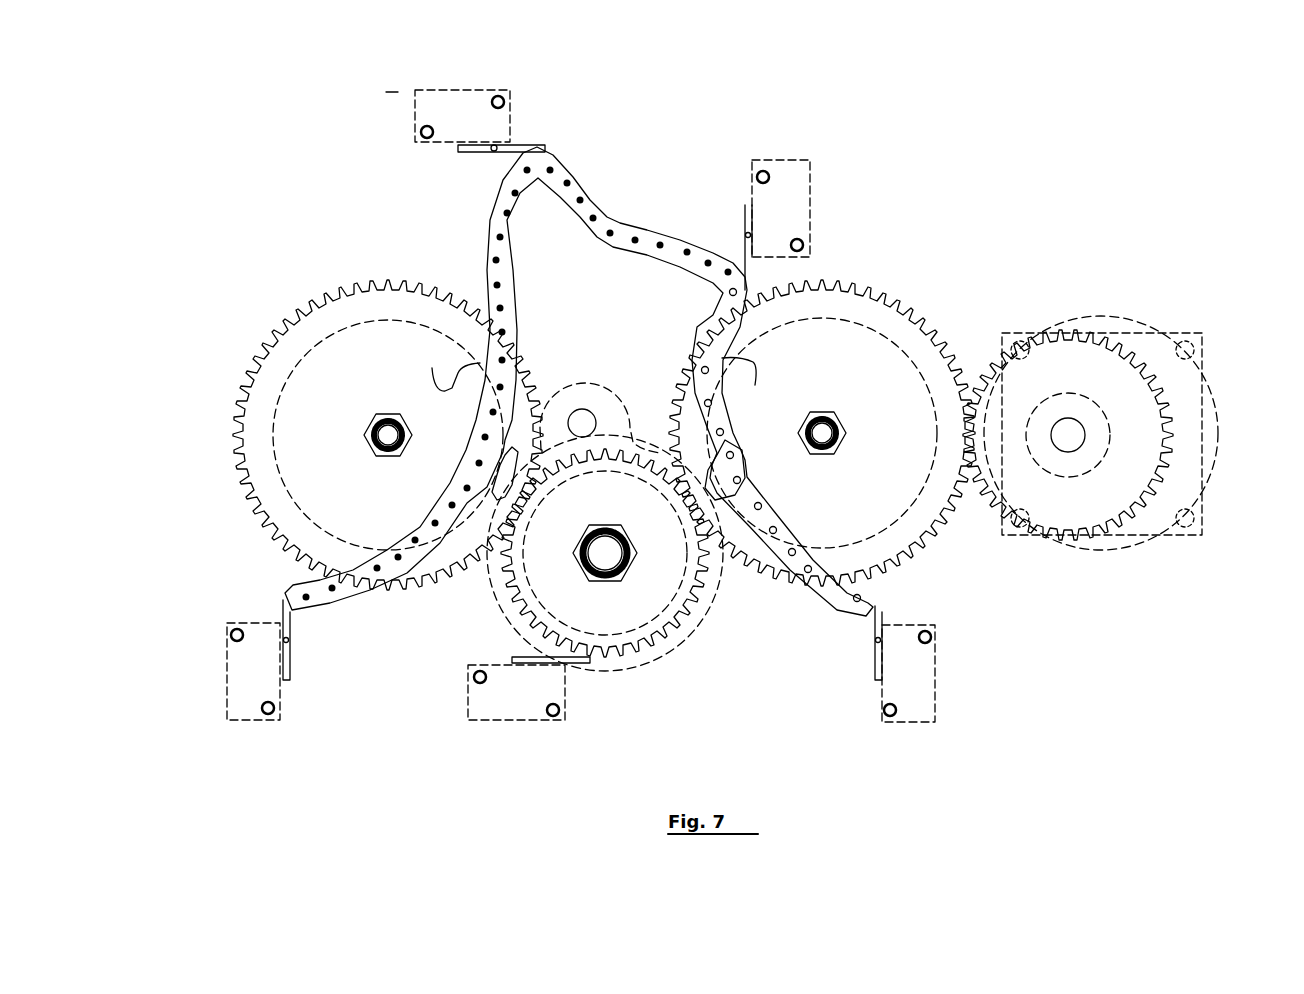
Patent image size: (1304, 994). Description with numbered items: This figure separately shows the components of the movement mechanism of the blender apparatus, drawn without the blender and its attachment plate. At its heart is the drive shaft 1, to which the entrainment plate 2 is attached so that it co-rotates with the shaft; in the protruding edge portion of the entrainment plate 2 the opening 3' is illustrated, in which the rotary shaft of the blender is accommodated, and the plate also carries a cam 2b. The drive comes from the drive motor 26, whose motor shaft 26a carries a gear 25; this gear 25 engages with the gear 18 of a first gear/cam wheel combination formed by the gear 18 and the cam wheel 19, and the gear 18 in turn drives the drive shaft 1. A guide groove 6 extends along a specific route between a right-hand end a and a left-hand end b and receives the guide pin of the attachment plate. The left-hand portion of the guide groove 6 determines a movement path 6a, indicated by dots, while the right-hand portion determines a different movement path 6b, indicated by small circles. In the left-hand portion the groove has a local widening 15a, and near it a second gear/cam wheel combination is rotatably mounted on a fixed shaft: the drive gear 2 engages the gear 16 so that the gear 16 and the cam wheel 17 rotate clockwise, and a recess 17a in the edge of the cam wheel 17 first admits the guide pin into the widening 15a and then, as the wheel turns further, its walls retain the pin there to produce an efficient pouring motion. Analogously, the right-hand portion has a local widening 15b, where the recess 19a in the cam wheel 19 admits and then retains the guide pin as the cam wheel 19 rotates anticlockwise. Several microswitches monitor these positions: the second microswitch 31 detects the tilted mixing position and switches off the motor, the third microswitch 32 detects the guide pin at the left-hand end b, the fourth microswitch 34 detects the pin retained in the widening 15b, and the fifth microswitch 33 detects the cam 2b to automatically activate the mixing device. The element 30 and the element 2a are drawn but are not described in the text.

The drive shaft 1 is at (663, 578).
The entrainment plate 2 is at (700, 613).
The gear arm 2a is at (565, 385).
The cam 2b is at (609, 562).
The opening 3' is at (604, 382).
The guide groove 6 is at (580, 178).
The movement path 6a is at (507, 213).
The movement path 6b is at (703, 397).
The local widening 15a is at (485, 505).
The local widening 15b is at (748, 578).
The gear 16 is at (348, 287).
The cam wheel 17 is at (394, 318).
The recess 17a is at (432, 380).
The gear 18 is at (918, 312).
The cam wheel 19 is at (925, 372).
The recess 19a is at (757, 380).
The gear 25 is at (1170, 400).
The drive motor 26 is at (1153, 347).
The motor shaft 26a is at (1071, 437).
The mounting block 30 is at (800, 192).
The second microswitch 31 is at (458, 110).
The third microswitch 32 is at (245, 668).
The fifth microswitch 33 is at (548, 670).
The fourth microswitch 34 is at (915, 670).
The right-hand end a is at (880, 598).
The left-hand end b is at (287, 600).